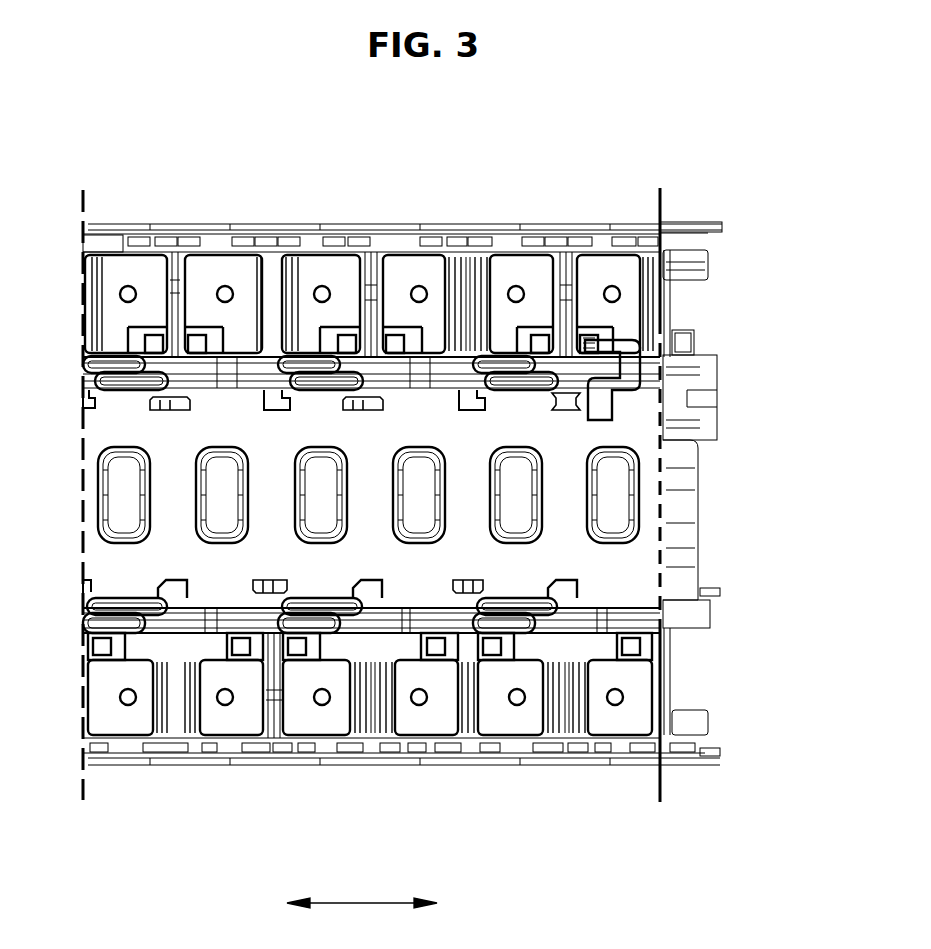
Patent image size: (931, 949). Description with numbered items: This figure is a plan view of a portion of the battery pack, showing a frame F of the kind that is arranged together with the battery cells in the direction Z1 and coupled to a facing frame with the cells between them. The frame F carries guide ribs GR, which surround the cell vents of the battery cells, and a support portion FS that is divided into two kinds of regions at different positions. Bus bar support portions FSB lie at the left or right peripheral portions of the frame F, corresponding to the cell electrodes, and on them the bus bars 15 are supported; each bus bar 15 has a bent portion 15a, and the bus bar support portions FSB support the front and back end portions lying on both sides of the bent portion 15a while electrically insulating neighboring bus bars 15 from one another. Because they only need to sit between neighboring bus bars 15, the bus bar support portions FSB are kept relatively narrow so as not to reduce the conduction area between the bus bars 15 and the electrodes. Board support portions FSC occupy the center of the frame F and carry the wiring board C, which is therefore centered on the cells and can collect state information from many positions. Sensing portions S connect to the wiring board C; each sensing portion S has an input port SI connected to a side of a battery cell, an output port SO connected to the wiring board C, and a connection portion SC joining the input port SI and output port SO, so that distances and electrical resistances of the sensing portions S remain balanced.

The bus bar 15 is at (608, 265).
The bent portion of bus bar 15a is at (652, 263).
The guide rib GR is at (317, 453).
The bus bar support portion FSB is at (668, 311).
The support portion FS is at (745, 489).
The board support portion FSC is at (705, 430).
The wiring board C is at (647, 497).
The output port SO is at (575, 592).
The sensing portion S is at (558, 555).
The frame F is at (255, 752).
The connection portion SC is at (473, 637).
The input port SI is at (492, 642).
The direction Z1 is at (362, 915).